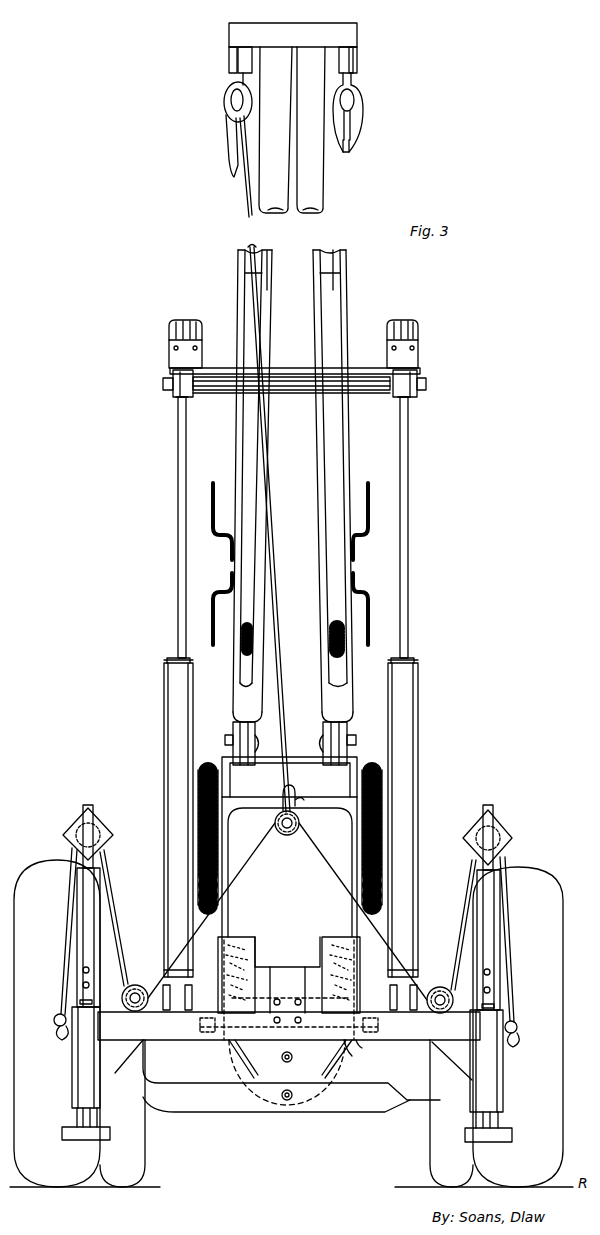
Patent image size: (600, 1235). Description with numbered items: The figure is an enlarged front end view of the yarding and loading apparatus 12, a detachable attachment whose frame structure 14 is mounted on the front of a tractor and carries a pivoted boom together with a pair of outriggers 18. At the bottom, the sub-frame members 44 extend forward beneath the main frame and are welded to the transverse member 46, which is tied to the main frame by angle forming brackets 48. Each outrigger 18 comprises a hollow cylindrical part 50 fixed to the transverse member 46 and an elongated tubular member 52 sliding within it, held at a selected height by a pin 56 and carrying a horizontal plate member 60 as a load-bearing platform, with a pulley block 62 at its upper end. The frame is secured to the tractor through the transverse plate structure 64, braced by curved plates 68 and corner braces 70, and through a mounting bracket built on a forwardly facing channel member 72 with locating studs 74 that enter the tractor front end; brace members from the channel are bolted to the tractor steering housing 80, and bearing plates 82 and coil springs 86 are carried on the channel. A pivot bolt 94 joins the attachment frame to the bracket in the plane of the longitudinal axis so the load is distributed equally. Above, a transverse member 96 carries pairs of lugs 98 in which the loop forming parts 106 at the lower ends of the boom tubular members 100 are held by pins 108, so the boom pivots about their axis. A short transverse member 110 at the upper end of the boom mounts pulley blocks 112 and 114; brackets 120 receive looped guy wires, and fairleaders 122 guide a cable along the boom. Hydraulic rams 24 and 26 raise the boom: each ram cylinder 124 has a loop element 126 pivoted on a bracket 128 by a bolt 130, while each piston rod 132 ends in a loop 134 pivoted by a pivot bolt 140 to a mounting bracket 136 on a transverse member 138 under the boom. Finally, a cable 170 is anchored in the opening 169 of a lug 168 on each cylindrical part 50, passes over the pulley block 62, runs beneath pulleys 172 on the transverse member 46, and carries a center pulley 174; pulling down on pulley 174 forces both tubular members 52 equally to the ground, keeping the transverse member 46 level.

The yarding and loading apparatus 12 is at (300, 521).
The frame structure 14 is at (424, 1044).
The outrigger member 18 is at (511, 1095).
The hydraulic ram 24 is at (160, 756).
The hydraulic ram 26 is at (426, 711).
The sub-frame member 44 is at (170, 1044).
The transverse member 46 is at (125, 1062).
The angle forming bracket 48 is at (200, 1042).
The hollow cylindrical part 50 is at (72, 1062).
The tubular member 52 is at (77, 942).
The pin 56 is at (80, 1001).
The horizontal plate member 60 is at (62, 1134).
The pulley block 62 is at (106, 832).
The transverse plate structure 64 is at (327, 1066).
The curved plate 68 is at (364, 1048).
The corner brace 70 is at (240, 937).
The channel member 72 is at (310, 1002).
The locating stud 74 is at (268, 1002).
The tractor steering housing 80 is at (240, 1068).
The bearing plate 82 is at (354, 1057).
The coil spring 86 is at (258, 949).
The pivot bolt 94 is at (268, 1086).
The transverse member 96 is at (298, 762).
The lug 98 is at (280, 732).
The tubular member 100 is at (302, 208).
The loop forming part 106 is at (240, 722).
The pin 108 is at (225, 740).
The short transverse member 110 is at (352, 30).
The pulley block 112 is at (228, 163).
The pulley block 114 is at (362, 128).
The bracket 120 is at (226, 580).
The fairleader 122 is at (169, 358).
The ram cylinder 124 is at (168, 714).
The loop element 126 is at (152, 988).
The bracket 128 is at (162, 1010).
The bolt 130 is at (414, 1000).
The ram piston rod 132 is at (178, 434).
The loop 134 is at (178, 404).
The mounting bracket 136 is at (190, 396).
The transverse member 138 is at (300, 394).
The pivot bolt 140 is at (163, 385).
The lug 168 is at (54, 1018).
The opening 169 is at (58, 1028).
The cable 170 is at (68, 922).
The pulley 172 is at (123, 975).
The pulley 174 is at (287, 836).